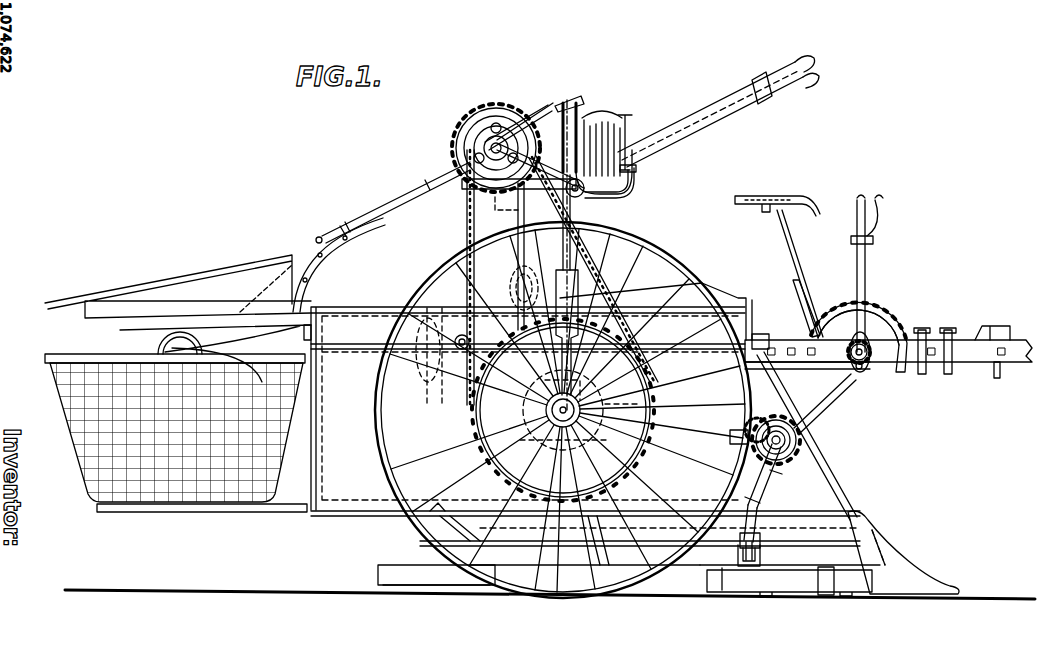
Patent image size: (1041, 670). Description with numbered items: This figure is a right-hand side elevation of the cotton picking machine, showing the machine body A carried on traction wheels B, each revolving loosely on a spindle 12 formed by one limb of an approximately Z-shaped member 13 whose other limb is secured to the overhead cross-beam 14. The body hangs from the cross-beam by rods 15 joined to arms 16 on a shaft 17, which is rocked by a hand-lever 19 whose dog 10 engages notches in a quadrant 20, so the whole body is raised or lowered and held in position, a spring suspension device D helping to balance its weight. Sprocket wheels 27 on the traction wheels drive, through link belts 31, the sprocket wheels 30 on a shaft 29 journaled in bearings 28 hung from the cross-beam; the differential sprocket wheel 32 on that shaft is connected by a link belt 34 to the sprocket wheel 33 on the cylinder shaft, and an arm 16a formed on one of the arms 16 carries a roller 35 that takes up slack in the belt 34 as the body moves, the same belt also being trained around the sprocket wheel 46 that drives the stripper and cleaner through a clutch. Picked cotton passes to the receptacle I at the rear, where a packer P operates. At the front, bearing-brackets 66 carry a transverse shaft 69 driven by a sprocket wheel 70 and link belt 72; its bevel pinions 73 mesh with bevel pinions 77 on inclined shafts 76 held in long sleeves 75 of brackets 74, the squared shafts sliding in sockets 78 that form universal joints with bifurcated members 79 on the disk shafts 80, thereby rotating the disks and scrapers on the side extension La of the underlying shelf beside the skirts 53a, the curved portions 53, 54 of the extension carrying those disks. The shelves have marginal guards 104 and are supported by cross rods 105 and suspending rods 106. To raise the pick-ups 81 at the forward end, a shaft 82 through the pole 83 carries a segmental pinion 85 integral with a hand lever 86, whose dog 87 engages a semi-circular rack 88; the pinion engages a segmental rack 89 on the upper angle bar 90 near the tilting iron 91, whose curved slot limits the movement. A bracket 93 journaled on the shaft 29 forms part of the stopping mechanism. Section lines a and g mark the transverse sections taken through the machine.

The dog 10 is at (638, 170).
The spindle 12 is at (596, 393).
The Z-shaped member 13 is at (567, 112).
The cross-beam 14 is at (594, 122).
The rod 15 is at (516, 218).
The arm 16 is at (552, 116).
The arm 16a is at (740, 204).
The shaft 17 is at (598, 198).
The hand-lever 19 is at (718, 111).
The quadrant 20 is at (632, 190).
The sprocket wheel 27 is at (655, 396).
The bearing 28 is at (488, 112).
The shaft 29 is at (478, 134).
The sprocket wheel 30 is at (485, 146).
The link belt 31 is at (460, 212).
The sprocket wheel 32 is at (458, 149).
The sprocket wheel 33 is at (638, 456).
The link belt 34 is at (446, 200).
The roller 35 is at (513, 282).
The sprocket wheel 46 is at (438, 386).
The curved portion 53 is at (378, 573).
The skirt 53a is at (722, 570).
The curved portion 54 is at (760, 582).
The bearing-bracket 66 is at (730, 438).
The transverse shaft 69 is at (800, 441).
The sprocket wheel 70 is at (800, 360).
The link belt 72 is at (762, 420).
The bevel pinion 73 is at (795, 444).
The bracket 74 is at (773, 468).
The bearing sleeve 75 is at (768, 482).
The inclined shaft 76 is at (762, 501).
The bevel pinion 77 is at (790, 452).
The angular socket 78 is at (758, 532).
The bifurcated member 79 is at (760, 543).
The shaft 80 is at (761, 560).
The pick-up 81 is at (934, 590).
The shaft 82 is at (870, 353).
The pole 83 is at (978, 363).
The segmental pinion 85 is at (868, 372).
The hand lever 86 is at (866, 283).
The dog 87 is at (882, 311).
The rack 88 is at (892, 331).
The segmental rack 89 is at (846, 381).
The upper angle bar 90 is at (775, 347).
The tilting iron 91 is at (862, 376).
The bracket 93 is at (456, 171).
The marginal guard 104 is at (436, 576).
The cross rod 105 is at (810, 596).
The suspending rod 106 is at (446, 535).
The machine body A is at (352, 480).
The traction wheel B is at (672, 250).
The spring suspension device D is at (632, 128).
The receptacle I is at (176, 424).
The packer P is at (160, 326).
The side extension La is at (682, 575).
The section line a is at (498, 100).
The section line g is at (780, 440).